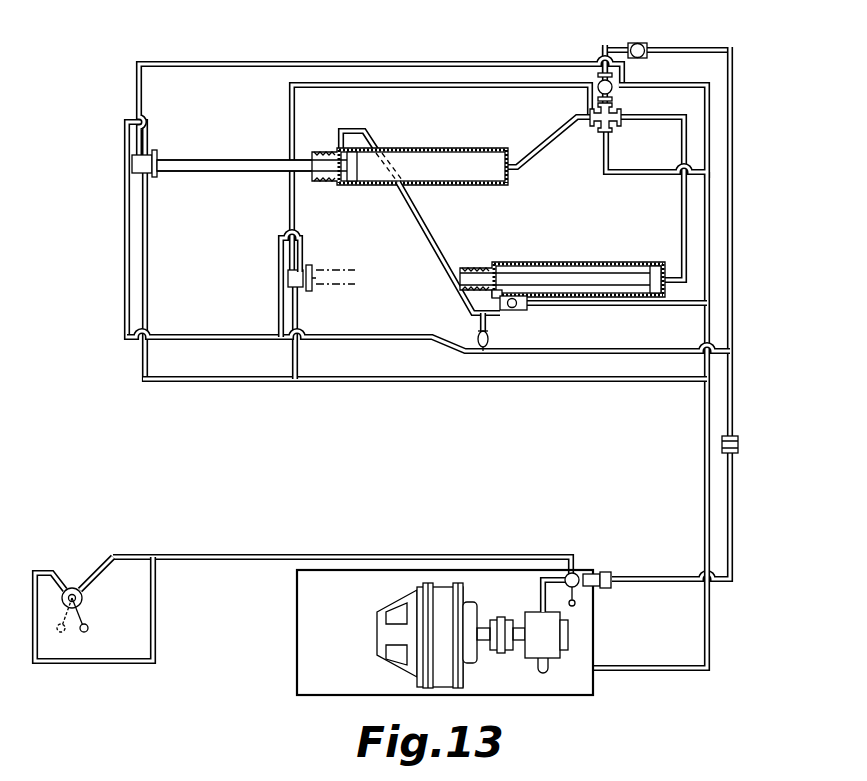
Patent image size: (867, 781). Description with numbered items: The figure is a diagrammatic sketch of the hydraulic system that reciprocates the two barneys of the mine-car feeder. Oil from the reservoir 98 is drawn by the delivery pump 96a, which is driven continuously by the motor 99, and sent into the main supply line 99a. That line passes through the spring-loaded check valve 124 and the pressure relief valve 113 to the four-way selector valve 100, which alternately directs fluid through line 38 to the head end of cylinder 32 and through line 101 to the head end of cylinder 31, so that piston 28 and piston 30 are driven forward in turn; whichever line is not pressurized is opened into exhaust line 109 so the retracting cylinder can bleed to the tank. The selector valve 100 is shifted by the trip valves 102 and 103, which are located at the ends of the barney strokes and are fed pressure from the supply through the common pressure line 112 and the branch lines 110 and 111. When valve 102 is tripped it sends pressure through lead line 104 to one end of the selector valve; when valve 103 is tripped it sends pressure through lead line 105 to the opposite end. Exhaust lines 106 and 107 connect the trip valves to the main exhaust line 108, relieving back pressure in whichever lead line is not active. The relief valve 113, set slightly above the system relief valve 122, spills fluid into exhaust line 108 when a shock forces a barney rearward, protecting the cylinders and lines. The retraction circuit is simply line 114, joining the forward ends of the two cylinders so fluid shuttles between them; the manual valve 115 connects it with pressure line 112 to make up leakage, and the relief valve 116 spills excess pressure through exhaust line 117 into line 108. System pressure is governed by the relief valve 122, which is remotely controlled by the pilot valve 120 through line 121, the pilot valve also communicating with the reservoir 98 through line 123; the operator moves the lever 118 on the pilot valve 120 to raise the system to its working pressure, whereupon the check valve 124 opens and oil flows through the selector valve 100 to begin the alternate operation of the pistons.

The piston 28 is at (355, 183).
The piston 30 is at (663, 266).
The cylinder 31 is at (422, 148).
The cylinder 32 is at (581, 262).
The lead line 38 is at (681, 210).
The pump unit 96a is at (548, 656).
The oil reservoir 98 is at (297, 633).
The motor 99 is at (432, 655).
The main supply line 99a is at (735, 542).
The four-way selector valve 100 is at (612, 124).
The lead line 101 is at (548, 142).
The trip valve 102 is at (149, 160).
The trip valve 103 is at (305, 288).
The lead line 104 is at (390, 62).
The lead line 105 is at (404, 88).
The exhaust line 106 is at (146, 298).
The exhaust line 107 is at (300, 369).
The main exhaust line 108 is at (704, 441).
The exhaust line 109 is at (649, 174).
The pressure line 110 is at (126, 243).
The pressure line 111 is at (279, 296).
The common fluid pressure line 112 is at (405, 334).
The pressure relief valve 113 is at (599, 86).
The line 114 is at (438, 240).
The valve 115 is at (477, 335).
The relief valve 116 is at (510, 307).
The exhaust line 117 is at (603, 306).
The lever 118 is at (85, 614).
The pilot valve 120 is at (72, 587).
The line 121 is at (245, 556).
The relief valve 122 is at (578, 574).
The line 123 is at (130, 663).
The check valve 124 is at (640, 42).